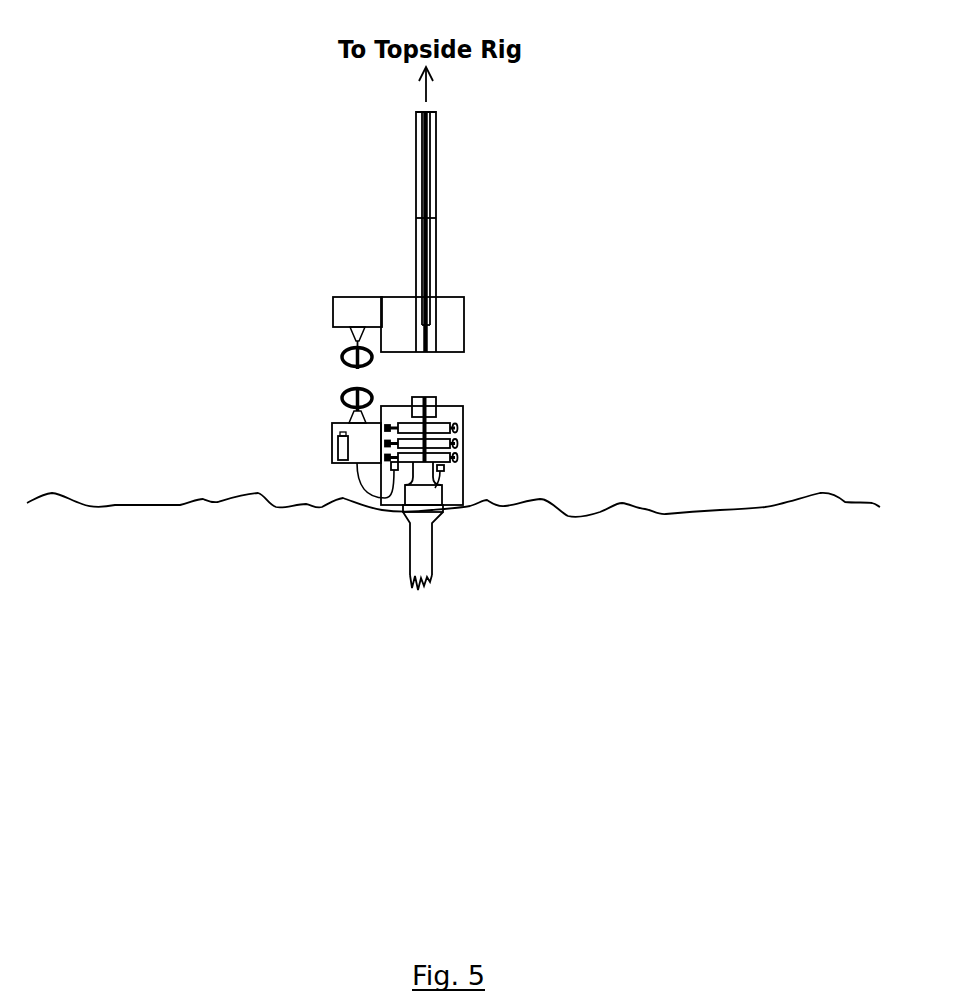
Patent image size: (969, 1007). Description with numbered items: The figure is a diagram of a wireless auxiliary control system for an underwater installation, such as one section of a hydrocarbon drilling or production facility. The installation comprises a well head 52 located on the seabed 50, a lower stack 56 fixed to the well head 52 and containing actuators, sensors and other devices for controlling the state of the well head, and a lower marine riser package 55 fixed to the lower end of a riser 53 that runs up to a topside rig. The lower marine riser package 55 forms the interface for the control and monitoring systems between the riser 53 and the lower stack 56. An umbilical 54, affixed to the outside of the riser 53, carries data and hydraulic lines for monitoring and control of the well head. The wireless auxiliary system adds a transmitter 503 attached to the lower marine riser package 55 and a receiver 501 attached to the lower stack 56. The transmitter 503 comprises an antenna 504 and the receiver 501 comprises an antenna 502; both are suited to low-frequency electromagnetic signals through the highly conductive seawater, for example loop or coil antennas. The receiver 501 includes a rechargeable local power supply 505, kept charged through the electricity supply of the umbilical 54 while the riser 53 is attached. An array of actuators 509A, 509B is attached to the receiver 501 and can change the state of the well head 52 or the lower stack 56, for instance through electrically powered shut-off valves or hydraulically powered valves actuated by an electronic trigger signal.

The seabed 50 is at (453, 519).
The well head 52 is at (443, 512).
The riser 53 is at (436, 248).
The umbilical 54 is at (429, 187).
The lower marine riser package 55 is at (464, 327).
The lower stack 56 is at (464, 449).
The receiver 501 is at (332, 430).
The antenna 502 is at (341, 397).
The transmitter 503 is at (333, 311).
The antenna 504 is at (341, 355).
The local power supply 505 is at (332, 453).
The actuator 509A is at (391, 466).
The actuator 509B is at (444, 468).